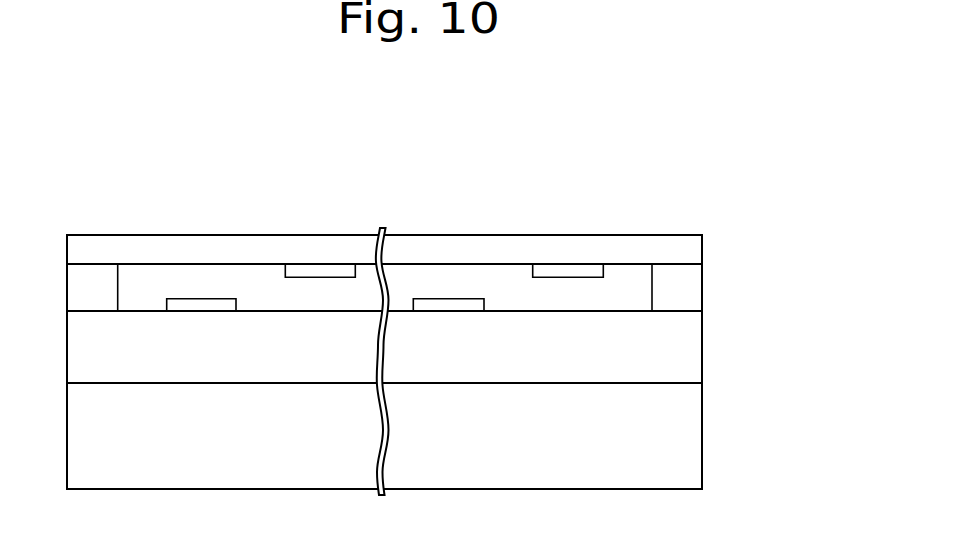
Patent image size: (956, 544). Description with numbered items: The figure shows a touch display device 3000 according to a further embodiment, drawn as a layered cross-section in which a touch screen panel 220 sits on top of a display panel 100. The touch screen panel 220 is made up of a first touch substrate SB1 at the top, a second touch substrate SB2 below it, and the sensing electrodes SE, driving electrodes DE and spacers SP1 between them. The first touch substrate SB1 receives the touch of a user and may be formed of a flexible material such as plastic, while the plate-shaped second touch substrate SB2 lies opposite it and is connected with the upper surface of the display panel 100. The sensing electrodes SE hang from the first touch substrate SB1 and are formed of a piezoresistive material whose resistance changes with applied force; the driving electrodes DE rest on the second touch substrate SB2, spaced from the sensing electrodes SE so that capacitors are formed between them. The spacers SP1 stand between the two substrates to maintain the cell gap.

The touch display device 3000 is at (739, 162).
The touch screen panel 220 is at (778, 240).
The display panel 100 is at (693, 433).
The first touch substrate SB1 is at (693, 250).
The sensing electrodes SE is at (593, 271).
The spacers SP1 is at (693, 290).
The driving electrodes DE is at (473, 306).
The second touch substrate SB2 is at (693, 347).